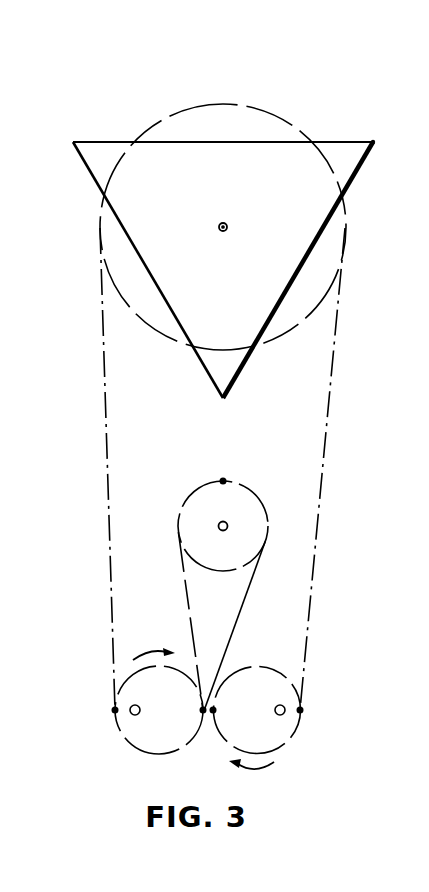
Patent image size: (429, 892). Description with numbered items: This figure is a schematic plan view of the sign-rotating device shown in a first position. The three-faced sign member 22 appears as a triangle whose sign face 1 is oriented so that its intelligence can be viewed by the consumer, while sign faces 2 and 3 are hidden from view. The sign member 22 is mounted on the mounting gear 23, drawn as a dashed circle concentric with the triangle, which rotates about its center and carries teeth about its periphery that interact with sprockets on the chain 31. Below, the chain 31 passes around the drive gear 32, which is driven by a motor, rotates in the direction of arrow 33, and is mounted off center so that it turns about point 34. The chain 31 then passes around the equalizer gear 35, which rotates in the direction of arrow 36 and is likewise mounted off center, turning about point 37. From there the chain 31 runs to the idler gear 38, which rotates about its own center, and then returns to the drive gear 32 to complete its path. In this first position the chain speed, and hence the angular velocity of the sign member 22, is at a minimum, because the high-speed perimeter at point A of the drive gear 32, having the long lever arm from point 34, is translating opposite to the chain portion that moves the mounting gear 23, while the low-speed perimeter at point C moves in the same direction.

The sign face 1 is at (240, 141).
The sign face 2 is at (143, 262).
The sign face 3 is at (303, 260).
The sign member 22 is at (356, 141).
The mounting gear 23 is at (178, 113).
The chain 31 is at (104, 392).
The drive gear 32 is at (179, 746).
The arrow 33 is at (148, 652).
The point 34 is at (132, 716).
The equalizer gear 35 is at (260, 677).
The arrow 36 is at (256, 762).
The point 37 is at (284, 716).
The idler gear 38 is at (194, 505).